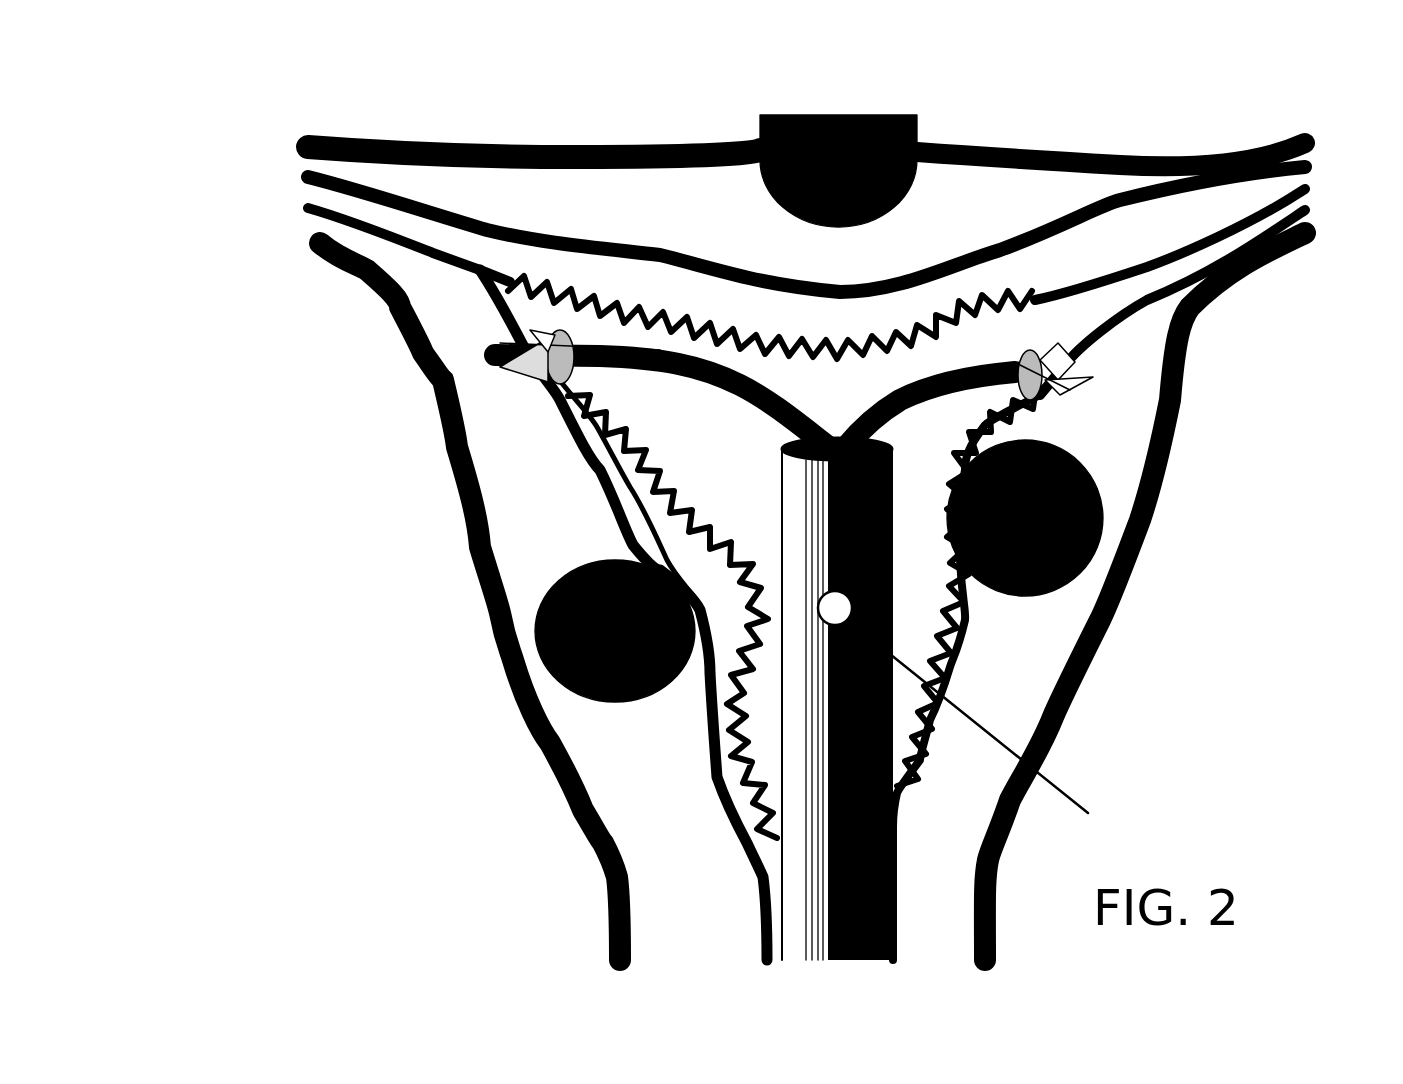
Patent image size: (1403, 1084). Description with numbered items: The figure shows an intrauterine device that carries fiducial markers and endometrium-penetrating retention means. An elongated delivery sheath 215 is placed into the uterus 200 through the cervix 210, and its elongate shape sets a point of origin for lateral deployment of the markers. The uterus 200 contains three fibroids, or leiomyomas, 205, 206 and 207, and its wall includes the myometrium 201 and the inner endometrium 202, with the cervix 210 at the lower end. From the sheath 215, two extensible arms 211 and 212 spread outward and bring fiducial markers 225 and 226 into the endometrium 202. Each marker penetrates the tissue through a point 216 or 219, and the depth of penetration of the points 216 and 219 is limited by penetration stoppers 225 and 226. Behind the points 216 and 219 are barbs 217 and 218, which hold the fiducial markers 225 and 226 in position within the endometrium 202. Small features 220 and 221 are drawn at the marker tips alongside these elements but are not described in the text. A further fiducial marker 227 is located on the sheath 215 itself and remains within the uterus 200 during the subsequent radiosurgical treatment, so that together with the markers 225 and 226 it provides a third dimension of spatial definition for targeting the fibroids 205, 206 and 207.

The uterus 200 is at (1170, 457).
The myometrium 201 is at (1043, 627).
The endometrium 202 is at (925, 650).
The fibroid 205 is at (1098, 527).
The fibroid 206 is at (535, 625).
The fibroid 207 is at (810, 118).
The cervix 210 is at (695, 955).
The extensible arm 211 is at (927, 378).
The extensible arm 212 is at (697, 367).
The sheath 215 is at (805, 872).
The point 216 is at (1093, 377).
The barb 217 is at (530, 340).
The barb 218 is at (1067, 390).
The point 219 is at (500, 367).
The anchor element 220 is at (553, 347).
The anchor tip 221 is at (1057, 343).
The fiducial marker 225 is at (550, 347).
The fiducial marker 226 is at (1040, 350).
The fiducial marker 227 is at (1007, 735).